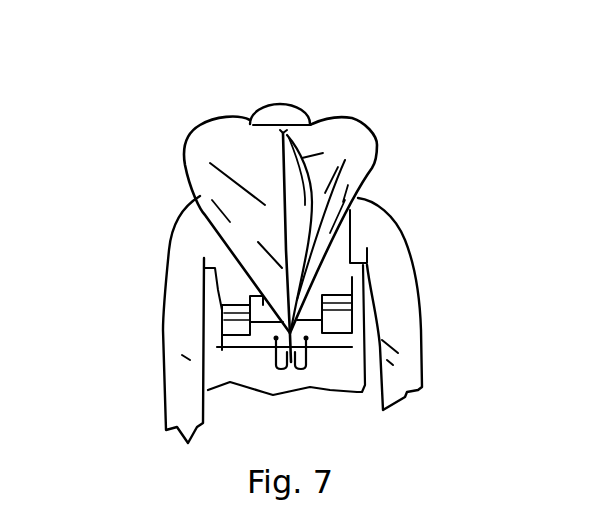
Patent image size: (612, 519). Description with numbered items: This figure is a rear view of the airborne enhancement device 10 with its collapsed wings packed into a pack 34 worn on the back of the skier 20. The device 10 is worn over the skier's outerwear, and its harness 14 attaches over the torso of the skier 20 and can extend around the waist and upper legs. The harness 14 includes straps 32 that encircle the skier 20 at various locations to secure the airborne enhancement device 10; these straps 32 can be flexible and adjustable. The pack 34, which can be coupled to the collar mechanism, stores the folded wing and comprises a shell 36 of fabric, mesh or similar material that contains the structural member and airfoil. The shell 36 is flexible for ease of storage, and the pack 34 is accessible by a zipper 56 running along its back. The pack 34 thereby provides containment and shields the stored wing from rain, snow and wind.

The airborne enhancement device 10 is at (405, 122).
The harness 14 is at (228, 282).
The skier 20 is at (166, 368).
The straps 32 is at (353, 313).
The pack 34 is at (181, 155).
The shell 36 is at (378, 176).
The zipper 56 is at (277, 162).